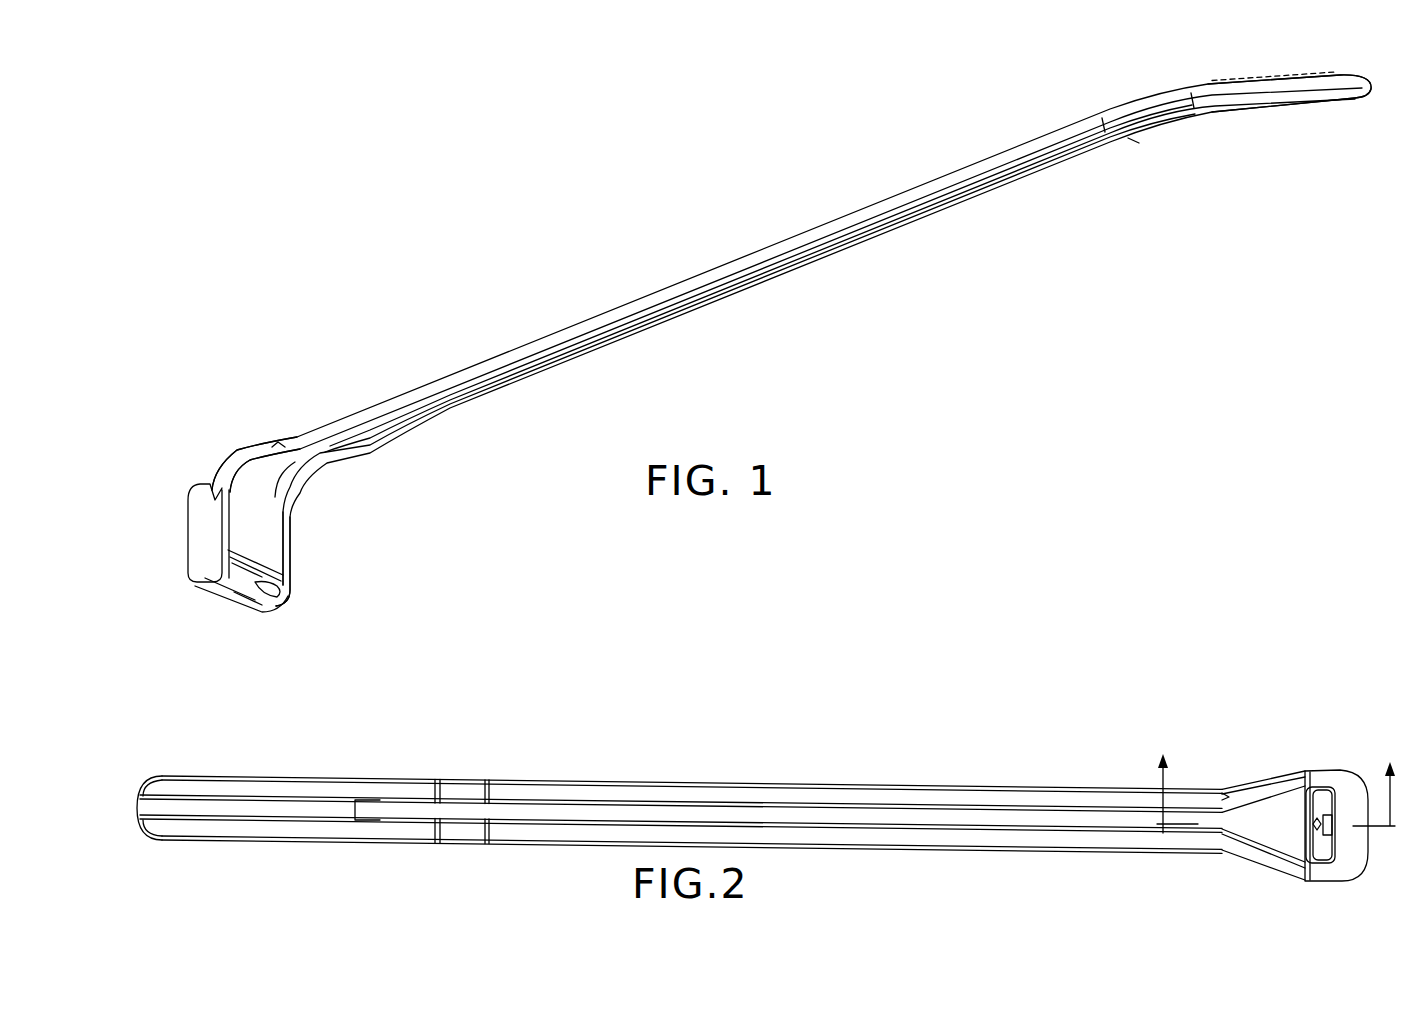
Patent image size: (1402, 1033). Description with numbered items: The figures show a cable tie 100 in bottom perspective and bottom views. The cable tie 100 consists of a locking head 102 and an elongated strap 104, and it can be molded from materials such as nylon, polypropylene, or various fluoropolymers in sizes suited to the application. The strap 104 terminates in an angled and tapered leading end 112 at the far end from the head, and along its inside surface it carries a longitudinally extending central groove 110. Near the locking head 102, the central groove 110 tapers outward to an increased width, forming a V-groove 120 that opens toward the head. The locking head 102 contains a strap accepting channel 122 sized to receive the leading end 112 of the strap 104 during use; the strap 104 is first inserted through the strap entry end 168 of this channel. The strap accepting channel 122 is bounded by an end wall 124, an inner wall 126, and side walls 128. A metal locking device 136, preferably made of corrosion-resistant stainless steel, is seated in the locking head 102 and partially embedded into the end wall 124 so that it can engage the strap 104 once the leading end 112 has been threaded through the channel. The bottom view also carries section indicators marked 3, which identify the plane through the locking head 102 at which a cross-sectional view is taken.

In FIG. 1, the cable tie 100 is at (358, 372).
In FIG. 2, the cable tie 100 is at (954, 759).
In FIG. 1, the locking head 102 is at (273, 557).
In FIG. 2, the locking head 102 is at (1343, 770).
In FIG. 1, the strap 104 is at (632, 302).
In FIG. 1, the central groove 110 is at (597, 345).
In FIG. 2, the central groove 110 is at (752, 810).
In FIG. 1, the leading end 112 is at (1270, 100).
In FIG. 2, the leading end 112 is at (281, 808).
In FIG. 1, the V-groove 120 is at (282, 485).
In FIG. 2, the V-groove 120 is at (1275, 811).
In FIG. 1, the strap accepting channel 122 is at (245, 593).
In FIG. 2, the strap accepting channel 122 is at (1325, 797).
In FIG. 1, the end wall 124 is at (218, 590).
In FIG. 1, the inner wall 126 is at (268, 527).
In FIG. 1, the side walls 128 is at (207, 518).
In FIG. 2, the metal locking device 136 is at (1333, 827).
In FIG. 1, the strap entry end 168 is at (258, 584).
In FIG. 2, the section line 3- 3 is at (1278, 779).